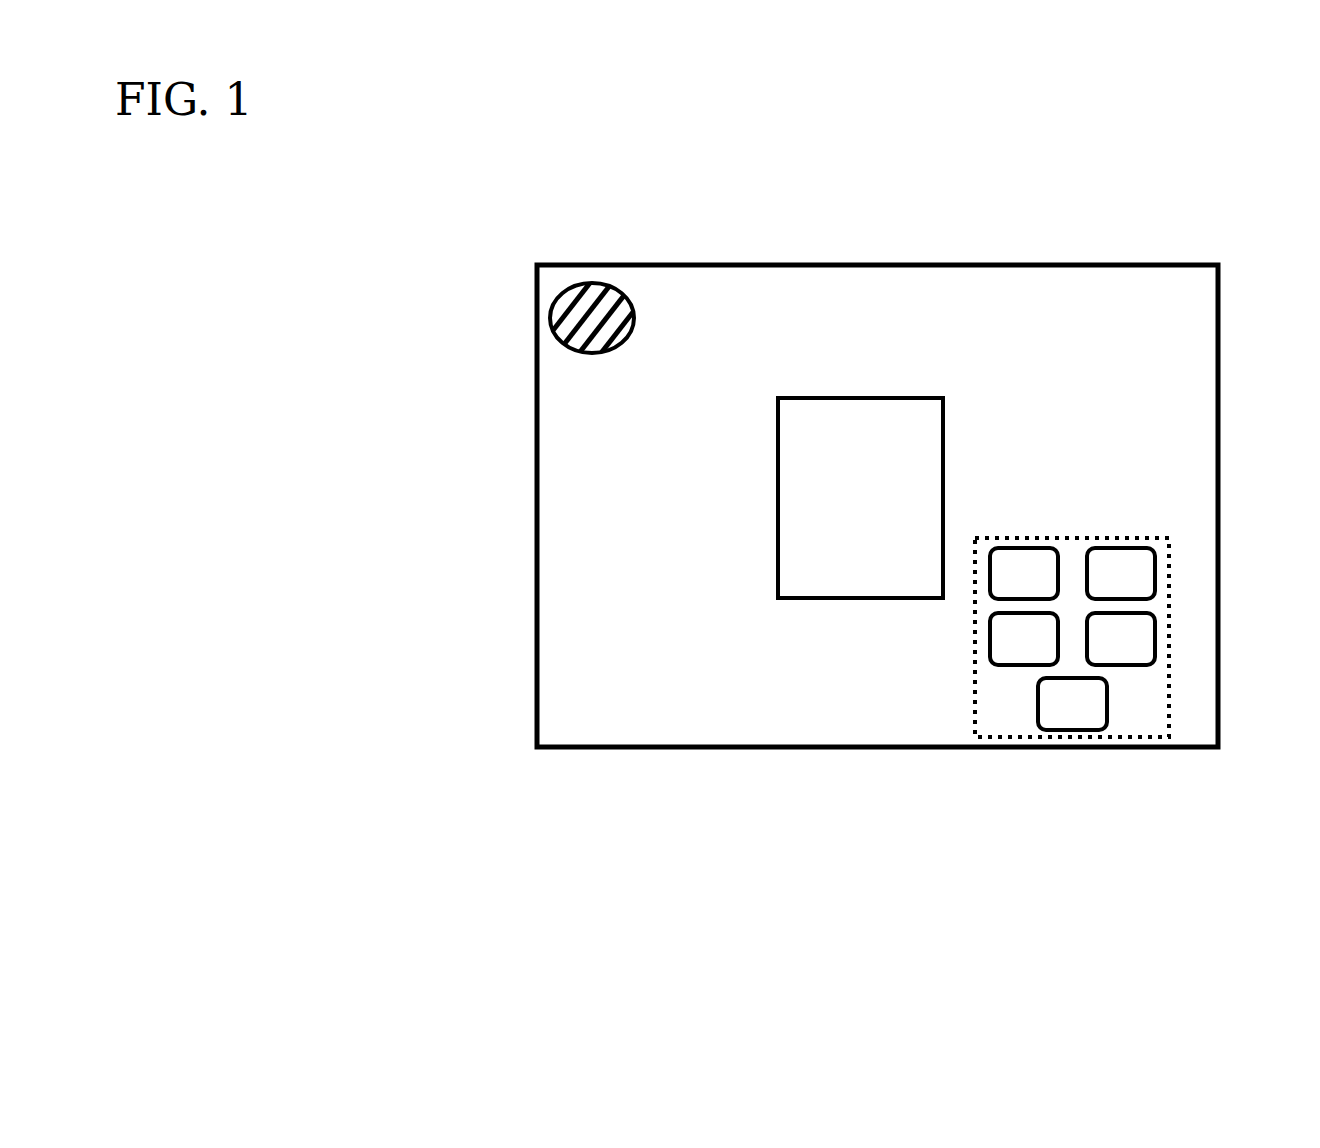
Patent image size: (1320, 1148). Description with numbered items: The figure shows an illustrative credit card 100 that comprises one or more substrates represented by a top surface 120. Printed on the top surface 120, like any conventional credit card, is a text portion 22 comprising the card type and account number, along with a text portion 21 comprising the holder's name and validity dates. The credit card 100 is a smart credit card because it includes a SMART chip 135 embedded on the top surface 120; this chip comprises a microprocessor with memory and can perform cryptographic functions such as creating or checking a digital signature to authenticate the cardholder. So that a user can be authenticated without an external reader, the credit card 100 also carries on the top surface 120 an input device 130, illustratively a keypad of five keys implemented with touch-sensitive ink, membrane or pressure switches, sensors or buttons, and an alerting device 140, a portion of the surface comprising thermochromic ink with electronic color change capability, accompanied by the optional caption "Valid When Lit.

The credit card 100 is at (346, 878).
The top surface 120 is at (730, 768).
The alerting device 140 is at (548, 292).
The text portion 22 is at (675, 512).
The SMART chip 135 is at (893, 615).
The input device 130 is at (1185, 678).
The text portion 21 is at (570, 667).